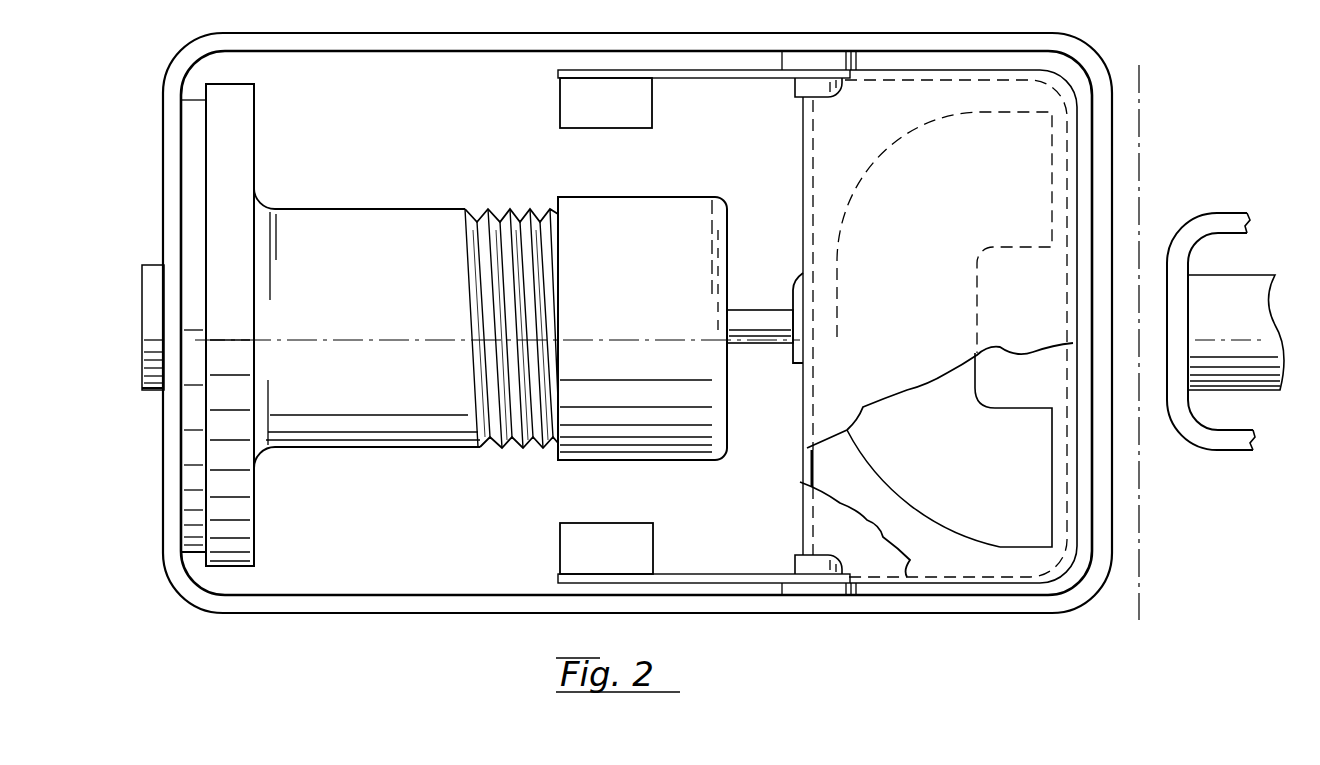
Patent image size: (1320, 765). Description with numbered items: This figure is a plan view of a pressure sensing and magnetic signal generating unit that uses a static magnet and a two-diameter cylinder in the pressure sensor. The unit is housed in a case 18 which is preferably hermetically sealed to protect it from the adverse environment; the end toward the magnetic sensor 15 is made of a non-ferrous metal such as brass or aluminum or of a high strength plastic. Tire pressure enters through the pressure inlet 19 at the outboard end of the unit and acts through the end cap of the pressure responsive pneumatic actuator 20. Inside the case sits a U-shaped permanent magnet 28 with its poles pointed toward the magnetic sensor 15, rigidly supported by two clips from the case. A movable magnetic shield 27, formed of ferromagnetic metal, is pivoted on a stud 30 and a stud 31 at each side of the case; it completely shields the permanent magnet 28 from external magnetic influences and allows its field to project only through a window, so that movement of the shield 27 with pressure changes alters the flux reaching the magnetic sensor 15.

The magnetic sensor 15 is at (1212, 453).
The case 18 is at (185, 595).
The pressure inlet 19 is at (150, 356).
The pressure responsive pneumatic actuator 20 is at (397, 213).
The movable magnetic shield 27 is at (1075, 118).
The permanent magnet 28 is at (985, 535).
The stud 30 is at (803, 97).
The stud 31 is at (800, 553).